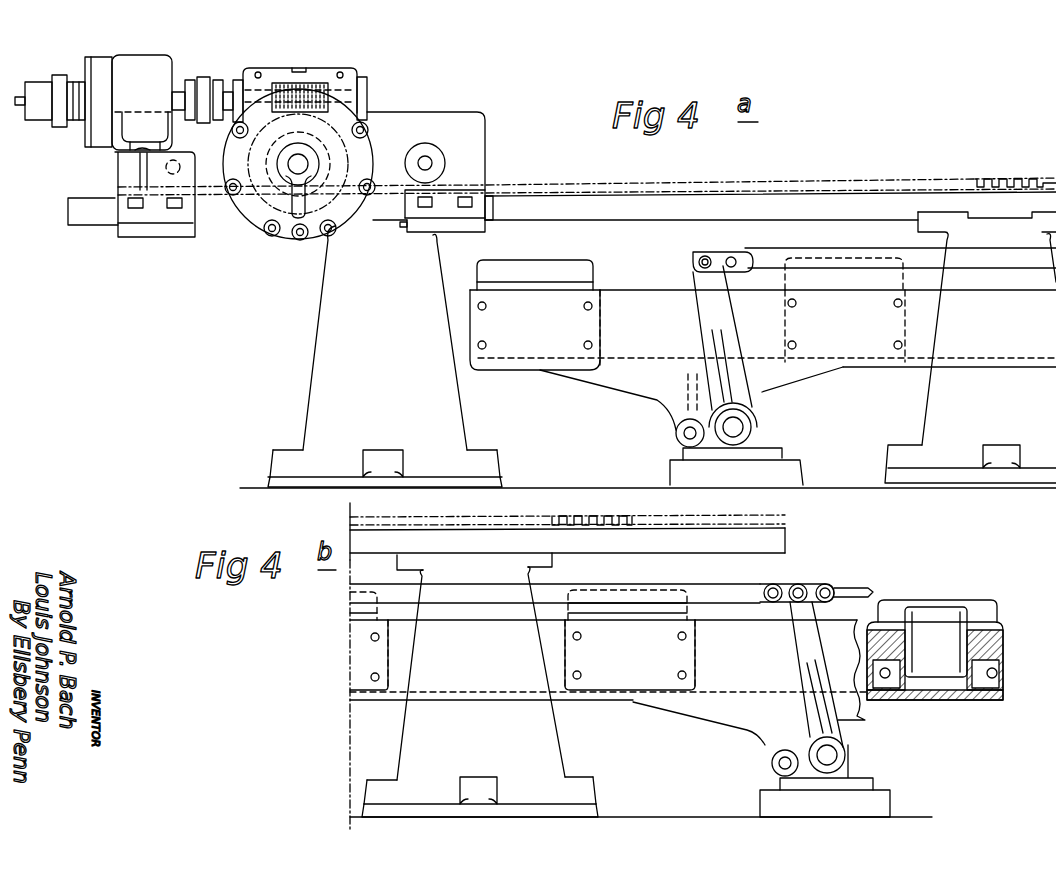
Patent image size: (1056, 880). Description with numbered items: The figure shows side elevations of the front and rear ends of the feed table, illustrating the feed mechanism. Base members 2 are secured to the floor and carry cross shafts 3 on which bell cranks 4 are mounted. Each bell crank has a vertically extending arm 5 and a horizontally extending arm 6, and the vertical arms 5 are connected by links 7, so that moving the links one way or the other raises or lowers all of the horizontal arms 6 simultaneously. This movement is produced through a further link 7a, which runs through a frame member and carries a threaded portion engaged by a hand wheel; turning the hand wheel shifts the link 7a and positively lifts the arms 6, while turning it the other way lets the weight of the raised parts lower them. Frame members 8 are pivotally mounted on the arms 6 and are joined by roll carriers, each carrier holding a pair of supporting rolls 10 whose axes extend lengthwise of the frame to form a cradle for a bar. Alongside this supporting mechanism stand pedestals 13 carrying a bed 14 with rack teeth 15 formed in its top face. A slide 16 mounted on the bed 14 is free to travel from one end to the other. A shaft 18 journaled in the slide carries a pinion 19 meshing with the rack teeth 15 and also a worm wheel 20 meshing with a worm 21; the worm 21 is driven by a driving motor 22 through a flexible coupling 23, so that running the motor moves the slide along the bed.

In FIG. 4A, the base member 2 is at (800, 466).
In FIG. 4A, the cross shaft 3 is at (735, 438).
In FIG. 4B, the cross shaft 3 is at (852, 753).
In FIG. 4A, the bell crank 4 is at (757, 414).
In FIG. 4A, the vertically extending arm 5 is at (718, 310).
In FIG. 4B, the vertically extending arm 5 is at (800, 643).
In FIG. 4A, the horizontally extending arm 6 is at (675, 433).
In FIG. 4B, the horizontally extending arm 6 is at (770, 766).
In FIG. 4A, the link 7 is at (848, 256).
In FIG. 4B, the link 7 is at (706, 592).
In FIG. 4B, the link 7a is at (865, 587).
In FIG. 4A, the frame member 8 is at (652, 320).
In FIG. 4B, the frame member 8 is at (708, 720).
In FIG. 4B, the supporting roll 10 is at (935, 650).
In FIG. 4A, the pedestal 13 is at (662, 349).
In FIG. 4B, the pedestal 13 is at (480, 685).
In FIG. 4A, the bed 14 is at (782, 186).
In FIG. 4B, the bed 14 is at (681, 530).
In FIG. 4A, the rack teeth 15 is at (992, 180).
In FIG. 4B, the rack teeth 15 is at (596, 508).
In FIG. 4A, the slide 16 is at (432, 122).
In FIG. 4A, the shaft 18 is at (302, 163).
In FIG. 4A, the pinion 19 is at (332, 168).
In FIG. 4A, the worm wheel 20 is at (262, 226).
In FIG. 4A, the worm 21 is at (316, 85).
In FIG. 4A, the driving motor 22 is at (105, 146).
In FIG. 4A, the flexible coupling 23 is at (206, 90).